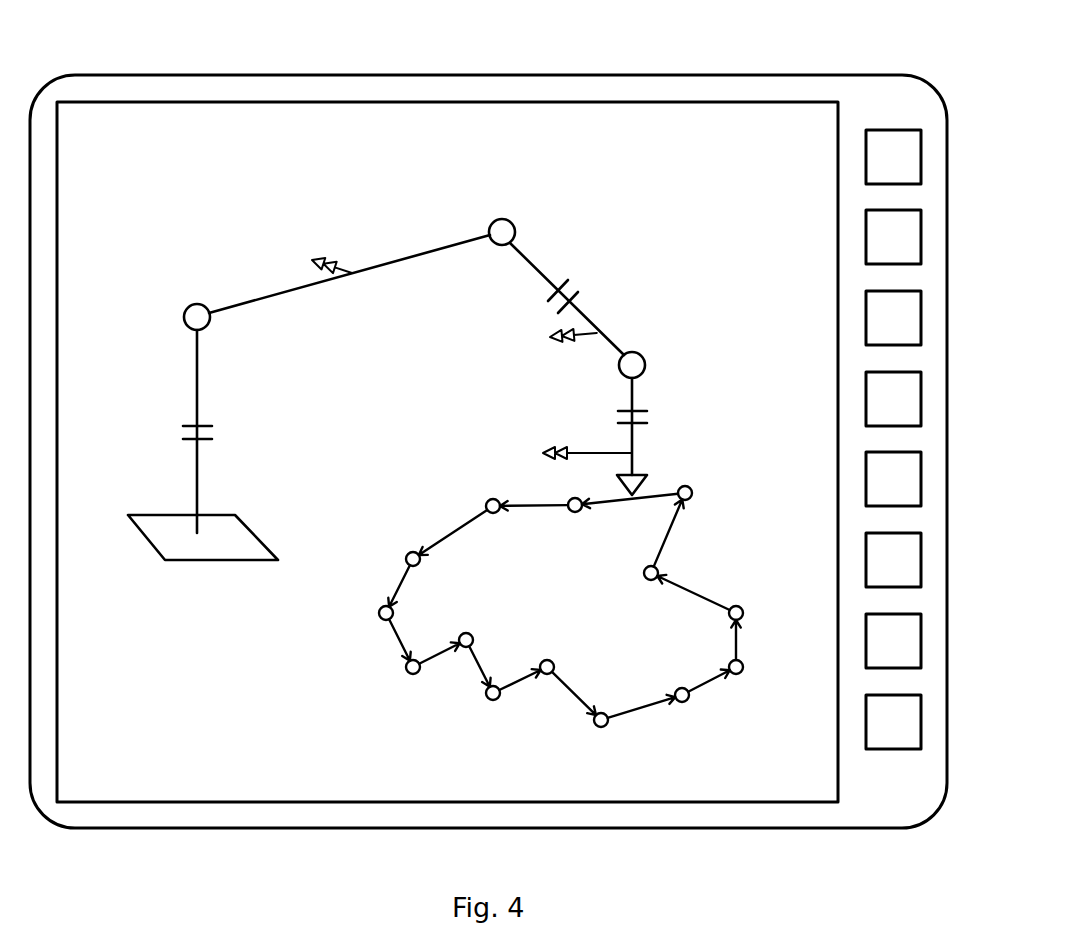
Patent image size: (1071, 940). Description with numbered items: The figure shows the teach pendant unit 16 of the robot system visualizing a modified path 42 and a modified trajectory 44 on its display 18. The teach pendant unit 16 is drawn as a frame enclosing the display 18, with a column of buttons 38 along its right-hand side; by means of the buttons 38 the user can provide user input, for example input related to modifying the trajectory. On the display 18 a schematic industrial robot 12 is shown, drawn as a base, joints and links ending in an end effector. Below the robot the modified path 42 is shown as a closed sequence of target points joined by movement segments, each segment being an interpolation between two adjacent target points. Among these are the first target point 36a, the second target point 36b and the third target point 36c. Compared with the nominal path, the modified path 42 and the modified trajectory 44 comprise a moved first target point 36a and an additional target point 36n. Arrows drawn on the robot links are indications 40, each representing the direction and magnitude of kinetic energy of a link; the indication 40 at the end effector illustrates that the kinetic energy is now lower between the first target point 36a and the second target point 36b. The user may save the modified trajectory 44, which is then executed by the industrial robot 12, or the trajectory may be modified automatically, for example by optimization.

The industrial robot 12 is at (207, 190).
The teach pendant unit 16 is at (302, 88).
The display 18 is at (447, 452).
The first target point 36a is at (692, 500).
The second target point 36b is at (575, 512).
The third target point 36c is at (493, 513).
The additional target point 36n is at (645, 580).
The buttons 38 is at (893, 157).
The indication 40 is at (593, 447).
The modified path 42 is at (397, 639).
The modified trajectory 44 is at (532, 596).